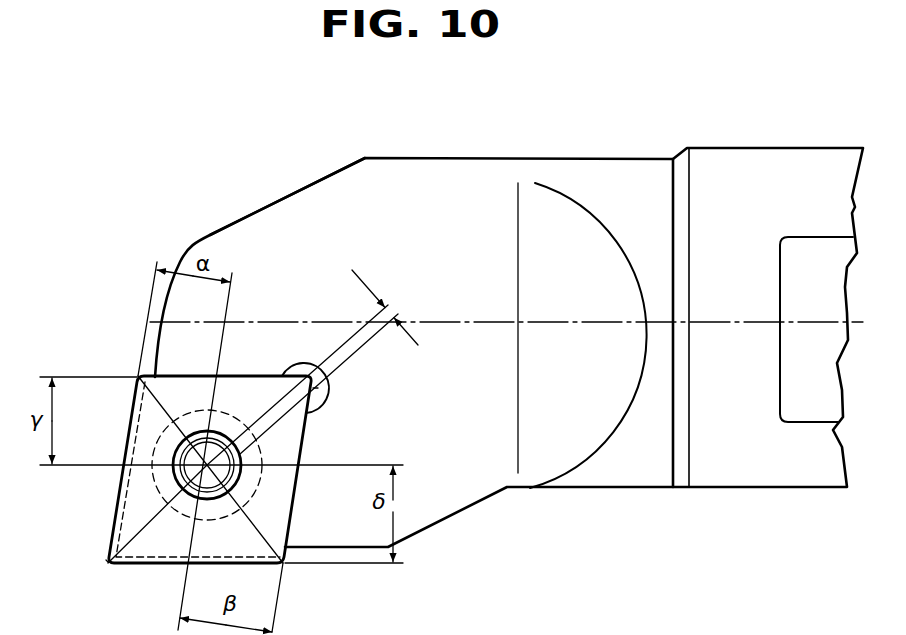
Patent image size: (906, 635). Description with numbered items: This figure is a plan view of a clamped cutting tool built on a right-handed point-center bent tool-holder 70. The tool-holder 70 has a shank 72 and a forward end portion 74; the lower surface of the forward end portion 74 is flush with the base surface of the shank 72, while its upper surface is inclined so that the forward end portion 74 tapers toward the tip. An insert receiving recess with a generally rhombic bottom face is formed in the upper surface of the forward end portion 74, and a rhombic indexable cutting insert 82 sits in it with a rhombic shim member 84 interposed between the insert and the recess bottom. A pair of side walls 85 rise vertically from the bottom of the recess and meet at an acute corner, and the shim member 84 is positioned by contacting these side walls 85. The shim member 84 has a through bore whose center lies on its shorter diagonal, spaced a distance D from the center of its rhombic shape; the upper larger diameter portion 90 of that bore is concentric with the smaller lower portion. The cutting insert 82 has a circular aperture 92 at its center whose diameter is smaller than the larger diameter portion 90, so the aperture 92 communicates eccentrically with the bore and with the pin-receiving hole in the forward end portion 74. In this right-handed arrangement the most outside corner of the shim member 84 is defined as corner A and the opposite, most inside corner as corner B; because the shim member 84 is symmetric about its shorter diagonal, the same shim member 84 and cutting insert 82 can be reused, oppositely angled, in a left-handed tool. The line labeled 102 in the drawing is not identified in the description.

The tool-holder 70 is at (628, 156).
The shank 72 is at (718, 158).
The forward end portion 74 is at (255, 231).
The indexable cutting insert 82 is at (133, 563).
The shim member 84 is at (133, 507).
The side walls 85 is at (252, 381).
The upper larger diameter portion 90 is at (170, 414).
The aperture 92 is at (177, 476).
The cutting edge reference line 102 is at (262, 452).
The corner A is at (106, 560).
The corner B is at (314, 388).
The distance D is at (385, 307).